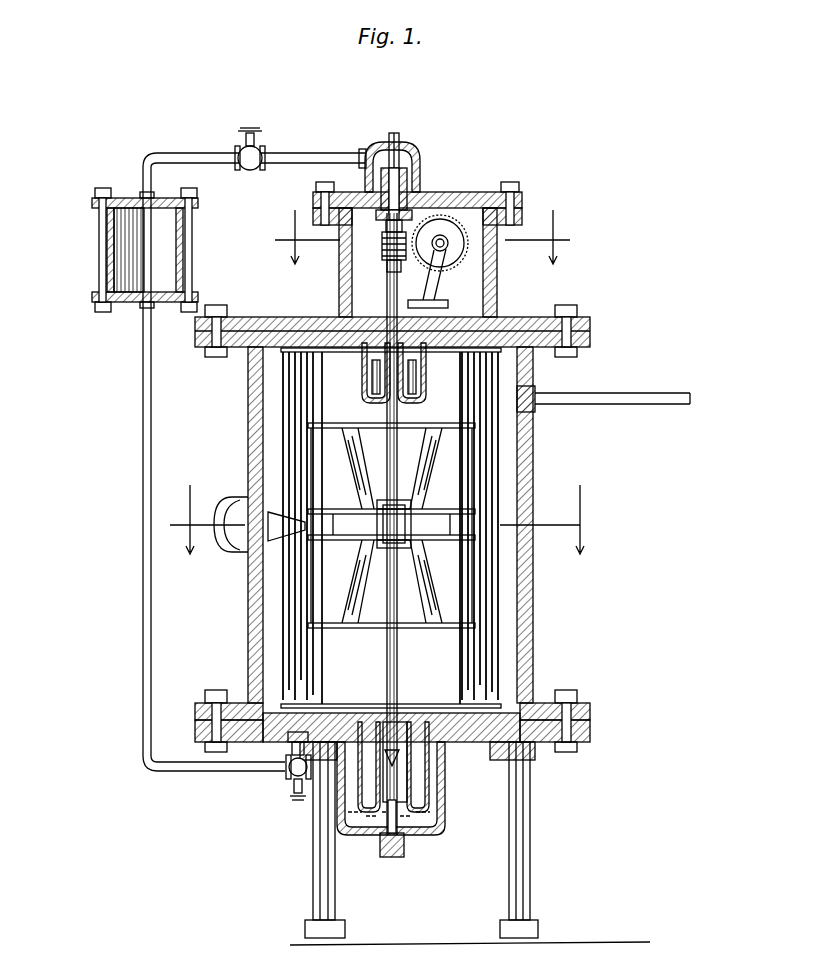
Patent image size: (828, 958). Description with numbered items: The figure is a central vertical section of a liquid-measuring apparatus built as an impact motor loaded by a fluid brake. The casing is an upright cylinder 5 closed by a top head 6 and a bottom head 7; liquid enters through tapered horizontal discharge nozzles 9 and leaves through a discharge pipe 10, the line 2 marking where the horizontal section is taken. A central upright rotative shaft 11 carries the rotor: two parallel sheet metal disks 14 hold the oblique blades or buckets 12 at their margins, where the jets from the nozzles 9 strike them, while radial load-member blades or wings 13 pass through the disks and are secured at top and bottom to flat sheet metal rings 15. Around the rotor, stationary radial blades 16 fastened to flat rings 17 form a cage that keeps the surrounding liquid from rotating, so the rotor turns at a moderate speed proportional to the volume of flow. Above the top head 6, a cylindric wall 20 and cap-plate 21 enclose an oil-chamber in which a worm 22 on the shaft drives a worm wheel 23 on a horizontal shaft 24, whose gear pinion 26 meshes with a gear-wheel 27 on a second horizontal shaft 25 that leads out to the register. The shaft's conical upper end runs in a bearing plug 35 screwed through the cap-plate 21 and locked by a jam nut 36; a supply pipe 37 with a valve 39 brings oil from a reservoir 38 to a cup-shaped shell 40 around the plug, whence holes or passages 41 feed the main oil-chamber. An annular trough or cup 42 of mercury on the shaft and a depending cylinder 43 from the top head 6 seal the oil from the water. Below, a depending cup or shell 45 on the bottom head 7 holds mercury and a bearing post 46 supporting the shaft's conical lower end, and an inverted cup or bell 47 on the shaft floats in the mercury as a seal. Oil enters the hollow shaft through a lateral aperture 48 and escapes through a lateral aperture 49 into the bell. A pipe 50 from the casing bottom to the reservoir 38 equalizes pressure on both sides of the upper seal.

The section line 2— 2 is at (376, 519).
The upright cylinder 5 is at (544, 622).
The top head 6 is at (518, 320).
The bottom head 7 is at (490, 786).
The discharge nozzle 9 is at (285, 530).
The discharge pipe 10 is at (650, 403).
The rotative shaft 11 is at (401, 696).
The blades or buckets 12 is at (412, 522).
The blades or wings 13 is at (385, 525).
The sheet metal disks 14 is at (328, 512).
The flat sheet metal rings 15 is at (336, 424).
The stationary radial blades 16 is at (465, 367).
The flat rings 17 is at (500, 350).
The cylindric wall 20 is at (495, 307).
The cap-plate 21 is at (470, 210).
The worm 22 is at (382, 252).
The worm wheel 23 is at (455, 244).
The horizontal shaft 24 is at (441, 243).
The second horizontal shaft 25 is at (442, 301).
The gear pinion 26 is at (428, 233).
The gear-wheel 27 is at (390, 292).
The bearing plug 35 is at (401, 172).
The jam nut 36 is at (408, 192).
The supply pipe 37 is at (310, 156).
The reservoir 38 is at (107, 236).
The valve 39 is at (245, 150).
The cup-shaped shell 40 is at (405, 152).
The holes or passages 41 is at (376, 204).
The annular trough or cup 42 is at (424, 394).
The cylinder 43 is at (362, 359).
The depending cup or shell 45 is at (437, 821).
The bearing post 46 is at (388, 828).
The inverted cup or bell 47 is at (430, 787).
The lateral aperture 48 is at (386, 244).
The lateral aperture 49 is at (400, 736).
The pipe 50 is at (142, 602).